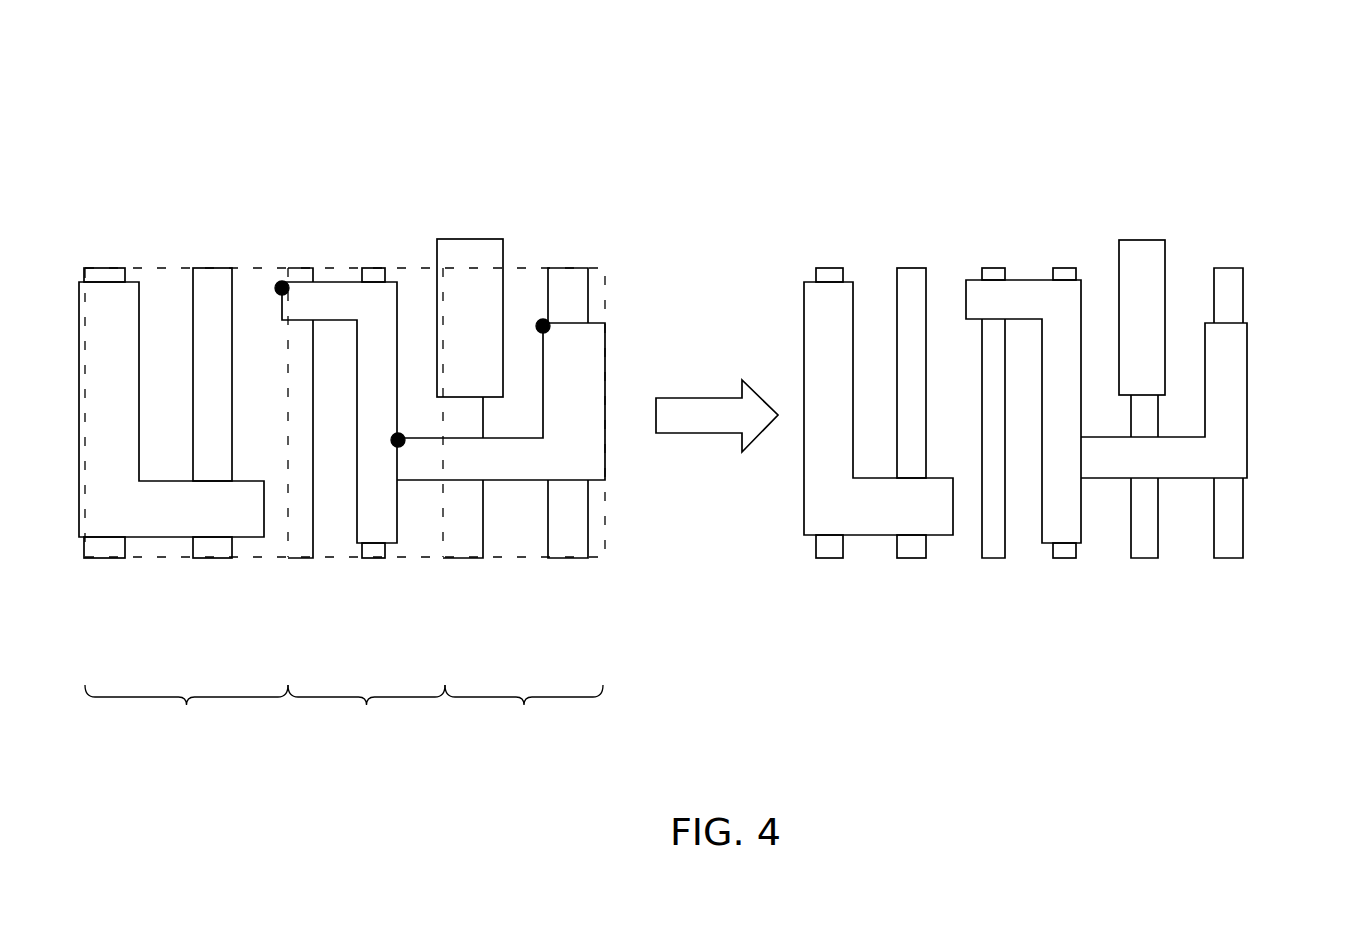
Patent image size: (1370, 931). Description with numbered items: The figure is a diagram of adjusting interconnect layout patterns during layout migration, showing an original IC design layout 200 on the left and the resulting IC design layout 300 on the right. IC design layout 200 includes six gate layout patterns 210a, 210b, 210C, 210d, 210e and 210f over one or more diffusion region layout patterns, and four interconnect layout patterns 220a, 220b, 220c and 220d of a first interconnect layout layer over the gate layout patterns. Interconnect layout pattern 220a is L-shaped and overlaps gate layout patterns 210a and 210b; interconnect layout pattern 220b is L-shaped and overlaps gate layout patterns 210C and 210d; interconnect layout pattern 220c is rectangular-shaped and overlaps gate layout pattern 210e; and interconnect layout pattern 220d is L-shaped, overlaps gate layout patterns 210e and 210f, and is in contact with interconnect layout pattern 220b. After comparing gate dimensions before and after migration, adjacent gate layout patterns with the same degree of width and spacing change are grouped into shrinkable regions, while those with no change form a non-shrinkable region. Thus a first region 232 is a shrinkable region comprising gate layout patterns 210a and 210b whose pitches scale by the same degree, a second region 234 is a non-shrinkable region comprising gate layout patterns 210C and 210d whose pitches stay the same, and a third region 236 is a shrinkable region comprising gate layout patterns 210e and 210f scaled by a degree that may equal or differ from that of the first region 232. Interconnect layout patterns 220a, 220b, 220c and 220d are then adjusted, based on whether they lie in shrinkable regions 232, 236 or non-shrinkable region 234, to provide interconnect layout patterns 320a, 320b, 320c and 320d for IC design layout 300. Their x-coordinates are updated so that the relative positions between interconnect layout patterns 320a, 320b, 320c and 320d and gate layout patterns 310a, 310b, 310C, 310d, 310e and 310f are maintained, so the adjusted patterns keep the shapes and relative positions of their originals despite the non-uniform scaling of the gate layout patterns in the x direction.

The IC design layout 200 is at (397, 384).
The IC design layout 300 is at (1081, 341).
The first region 232 is at (186, 715).
The second region 234 is at (366, 715).
The third region 236 is at (524, 715).
The gate layout pattern 210a is at (107, 560).
The gate layout pattern 210b is at (212, 560).
The gate layout pattern 210C is at (303, 560).
The gate layout pattern 210d is at (375, 560).
The gate layout pattern 210e is at (462, 560).
The gate layout pattern 210f is at (567, 560).
The interconnect layout pattern 220a is at (130, 288).
The interconnect layout pattern 220b is at (337, 290).
The interconnect layout pattern 220c is at (472, 257).
The interconnect layout pattern 220d is at (587, 342).
The interconnect layout pattern 320a is at (829, 290).
The interconnect layout pattern 320b is at (1030, 292).
The interconnect layout pattern 320c is at (1142, 257).
The interconnect layout pattern 320d is at (1233, 342).
The gate layout pattern 310a is at (830, 560).
The gate layout pattern 310b is at (915, 560).
The gate layout pattern 310C is at (998, 560).
The gate layout pattern 310d is at (1068, 560).
The gate layout pattern 310e is at (1148, 560).
The gate layout pattern 310f is at (1232, 560).